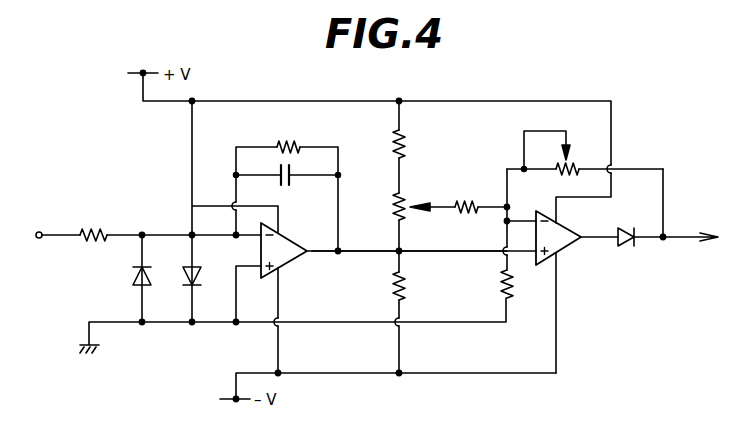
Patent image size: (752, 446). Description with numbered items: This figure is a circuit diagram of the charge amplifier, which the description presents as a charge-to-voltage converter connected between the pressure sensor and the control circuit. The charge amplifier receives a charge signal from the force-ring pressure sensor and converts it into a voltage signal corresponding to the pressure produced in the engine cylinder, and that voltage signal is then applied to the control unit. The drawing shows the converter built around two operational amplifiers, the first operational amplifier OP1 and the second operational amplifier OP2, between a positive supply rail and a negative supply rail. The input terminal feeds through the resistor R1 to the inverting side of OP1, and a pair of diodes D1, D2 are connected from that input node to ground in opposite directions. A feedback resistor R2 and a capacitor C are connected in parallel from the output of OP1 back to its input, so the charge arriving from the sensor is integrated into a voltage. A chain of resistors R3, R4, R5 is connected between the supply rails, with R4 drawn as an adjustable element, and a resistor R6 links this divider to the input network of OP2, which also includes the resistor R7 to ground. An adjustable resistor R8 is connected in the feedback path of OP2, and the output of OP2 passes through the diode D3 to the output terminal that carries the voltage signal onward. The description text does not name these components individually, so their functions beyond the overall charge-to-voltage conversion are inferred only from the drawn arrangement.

The input resistor R1 is at (93, 225).
The feedback resistor R2 is at (287, 148).
The feedback capacitor C is at (286, 208).
The protection diode D1 is at (129, 278).
The protection diode D2 is at (204, 278).
The first operational amplifier OP1 is at (297, 262).
The divider resistor R3 is at (385, 144).
The variable divider resistor R4 is at (385, 206).
The divider resistor R5 is at (385, 286).
The offset resistor R6 is at (458, 198).
The input resistor of second amplifier R7 is at (493, 284).
The variable gain resistor R8 is at (585, 153).
The second operational amplifier OP2 is at (572, 248).
The output diode D3 is at (627, 249).